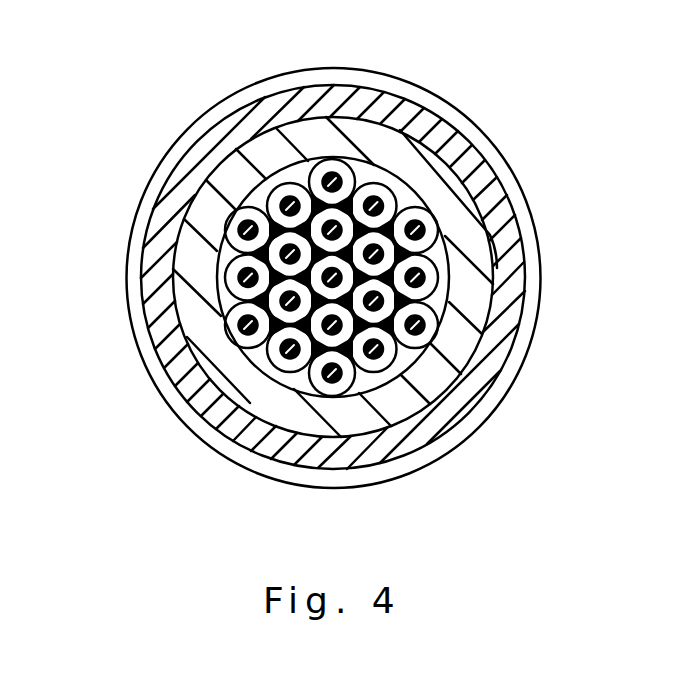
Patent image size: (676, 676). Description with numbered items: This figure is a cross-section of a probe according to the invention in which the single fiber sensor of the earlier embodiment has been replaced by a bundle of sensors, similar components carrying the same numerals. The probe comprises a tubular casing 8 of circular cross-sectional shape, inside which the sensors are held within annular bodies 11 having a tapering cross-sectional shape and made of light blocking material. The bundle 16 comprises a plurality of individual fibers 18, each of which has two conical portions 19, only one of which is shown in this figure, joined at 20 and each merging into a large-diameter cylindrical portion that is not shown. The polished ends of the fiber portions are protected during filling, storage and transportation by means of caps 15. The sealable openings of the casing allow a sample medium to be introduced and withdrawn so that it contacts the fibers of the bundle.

The tubular casing 8 is at (510, 233).
The annular body 11 is at (450, 207).
The cap 15 is at (497, 388).
The bundle 16 is at (402, 203).
The individual fiber 18 is at (243, 228).
The conical portion 19 is at (218, 248).
The joint of conical portions 20 is at (229, 239).